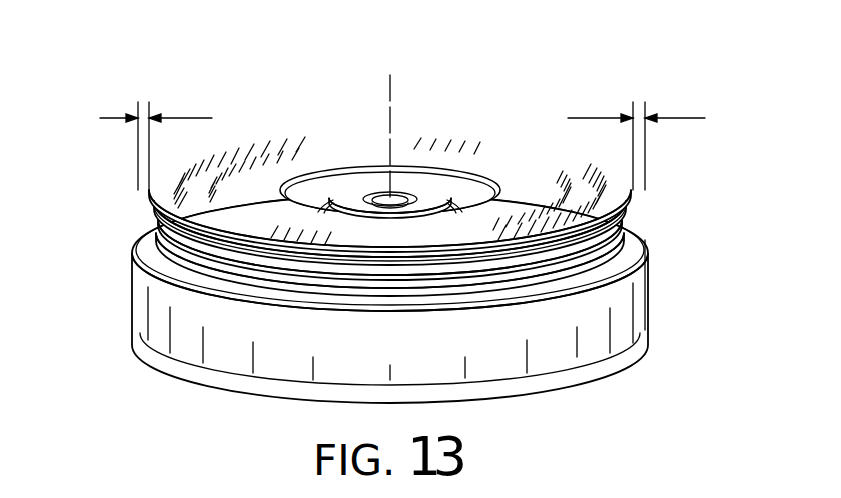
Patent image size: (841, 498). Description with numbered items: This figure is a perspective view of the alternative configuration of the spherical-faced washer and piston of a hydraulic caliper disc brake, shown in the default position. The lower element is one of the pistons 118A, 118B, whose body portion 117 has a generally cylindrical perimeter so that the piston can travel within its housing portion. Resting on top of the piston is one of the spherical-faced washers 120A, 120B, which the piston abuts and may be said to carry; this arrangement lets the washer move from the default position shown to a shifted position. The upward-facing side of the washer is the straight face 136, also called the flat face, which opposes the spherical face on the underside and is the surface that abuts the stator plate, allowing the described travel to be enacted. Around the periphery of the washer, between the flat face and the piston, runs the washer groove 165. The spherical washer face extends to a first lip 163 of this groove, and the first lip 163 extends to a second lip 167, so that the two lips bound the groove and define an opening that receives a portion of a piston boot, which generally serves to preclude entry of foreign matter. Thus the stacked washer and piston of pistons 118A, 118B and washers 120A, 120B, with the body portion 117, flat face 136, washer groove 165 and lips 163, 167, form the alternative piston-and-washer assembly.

The body portion 117 is at (618, 322).
The piston 118A is at (467, 379).
The piston 118B is at (552, 386).
The spherical-faced washer 120A is at (390, 133).
The spherical-faced washer 120B is at (296, 134).
The straight face 136 is at (496, 150).
The first lip 163 is at (155, 222).
The washer groove 165 is at (203, 250).
The second lip 167 is at (265, 247).